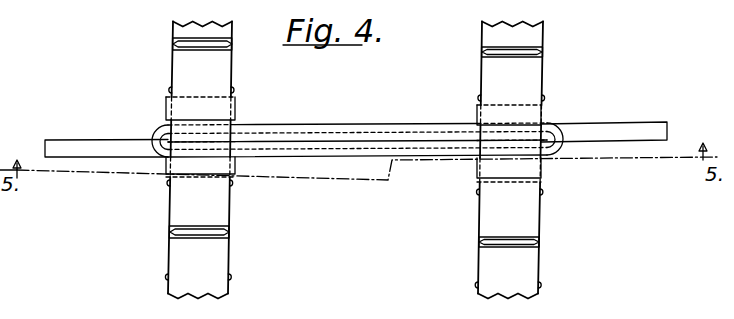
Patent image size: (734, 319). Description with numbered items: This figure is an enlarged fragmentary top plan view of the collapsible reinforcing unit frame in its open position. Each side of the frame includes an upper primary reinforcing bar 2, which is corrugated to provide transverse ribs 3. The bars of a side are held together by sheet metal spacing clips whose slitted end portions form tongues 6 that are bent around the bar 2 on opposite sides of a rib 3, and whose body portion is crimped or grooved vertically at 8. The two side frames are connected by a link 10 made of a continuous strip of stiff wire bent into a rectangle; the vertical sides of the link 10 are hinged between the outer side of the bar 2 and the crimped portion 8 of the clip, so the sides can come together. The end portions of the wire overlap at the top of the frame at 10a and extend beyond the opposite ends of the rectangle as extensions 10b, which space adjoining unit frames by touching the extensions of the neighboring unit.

The second bar 2 is at (178, 202).
The transverse ribs 3 is at (498, 55).
The tongues 6 is at (226, 111).
The crimped or grooved portion 8 is at (158, 128).
The link 10 is at (338, 113).
The overlapping end portions 10a is at (400, 115).
The extensions 10b is at (672, 111).